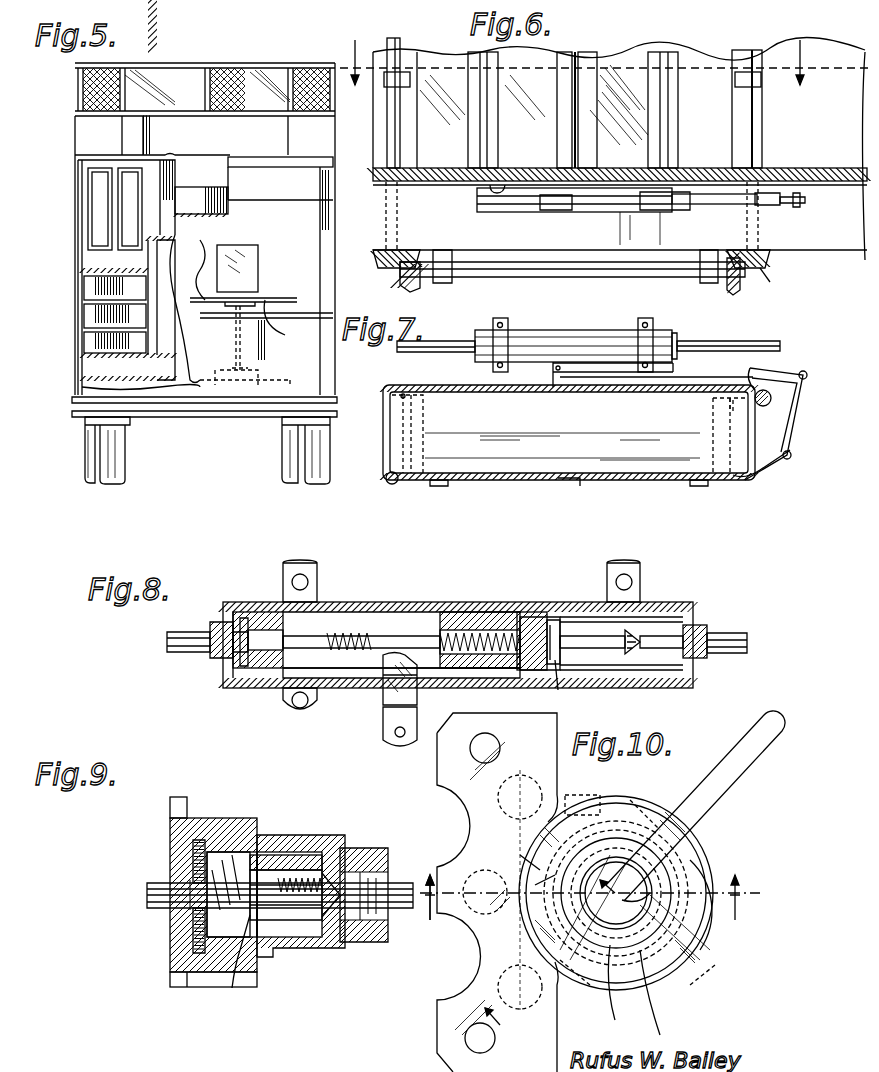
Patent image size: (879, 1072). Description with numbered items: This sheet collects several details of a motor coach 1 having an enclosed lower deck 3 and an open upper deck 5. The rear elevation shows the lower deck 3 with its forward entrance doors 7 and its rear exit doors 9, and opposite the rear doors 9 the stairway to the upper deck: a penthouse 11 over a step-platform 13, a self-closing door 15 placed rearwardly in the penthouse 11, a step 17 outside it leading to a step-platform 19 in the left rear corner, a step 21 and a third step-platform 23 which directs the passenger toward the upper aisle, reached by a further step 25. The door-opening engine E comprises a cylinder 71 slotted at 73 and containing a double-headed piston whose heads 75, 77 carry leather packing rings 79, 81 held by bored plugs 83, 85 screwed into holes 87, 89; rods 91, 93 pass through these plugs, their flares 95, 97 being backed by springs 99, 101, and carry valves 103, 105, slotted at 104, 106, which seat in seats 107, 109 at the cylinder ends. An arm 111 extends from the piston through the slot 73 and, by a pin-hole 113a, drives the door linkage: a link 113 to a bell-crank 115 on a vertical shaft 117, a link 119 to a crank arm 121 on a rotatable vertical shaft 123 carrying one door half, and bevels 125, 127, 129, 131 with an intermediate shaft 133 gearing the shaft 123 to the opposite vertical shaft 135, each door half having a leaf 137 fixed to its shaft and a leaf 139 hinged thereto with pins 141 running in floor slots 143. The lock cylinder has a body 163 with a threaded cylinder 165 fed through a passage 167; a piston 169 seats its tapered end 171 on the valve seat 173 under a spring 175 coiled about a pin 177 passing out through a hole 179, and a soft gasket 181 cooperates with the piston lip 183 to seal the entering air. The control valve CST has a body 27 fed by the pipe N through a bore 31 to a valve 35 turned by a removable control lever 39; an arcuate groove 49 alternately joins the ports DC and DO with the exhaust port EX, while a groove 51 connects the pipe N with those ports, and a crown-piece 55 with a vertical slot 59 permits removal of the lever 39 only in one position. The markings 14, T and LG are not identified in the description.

In FIG. 5, the motor coach 1 is at (238, 62).
In FIG. 5, the enclosed lower deck 3 is at (313, 366).
In FIG. 5, the open upper deck 5 is at (95, 133).
In FIG. 6, the set of doors 7 is at (690, 40).
In FIG. 7, the set of doors 9 is at (690, 500).
In FIG. 5, the penthouse 11 is at (155, 180).
In FIG. 9, the penthouse 11 is at (431, 907).
In FIG. 10, the penthouse 11 is at (585, 899).
In FIG. 5, the step-platform 13 is at (110, 350).
In FIG. 10, the valve plate 14 is at (590, 892).
In FIG. 5, the self-closing door 15 is at (100, 205).
In FIG. 5, the step 17 is at (110, 325).
In FIG. 5, the step-platform 19 is at (105, 268).
In FIG. 5, the step 21 is at (178, 238).
In FIG. 5, the third step-platform 23 is at (200, 215).
In FIG. 5, the step 25 is at (195, 195).
In FIG. 10, the body 27 is at (690, 935).
In FIG. 10, the bore 31 is at (540, 870).
In FIG. 10, the valve 35 is at (560, 890).
In FIG. 10, the control lever 39 is at (740, 775).
In FIG. 10, the arcuate groove 49 is at (712, 905).
In FIG. 10, the groove 51 is at (618, 999).
In FIG. 10, the crown-piece 55 is at (665, 1001).
In FIG. 10, the vertical slot 59 is at (712, 870).
In FIG. 6, the cylinder 71 is at (650, 210).
In FIG. 7, the cylinder 71 is at (590, 345).
In FIG. 8, the cylinder 71 is at (650, 602).
In FIG. 6, the slot 73 is at (580, 213).
In FIG. 8, the slot 73 is at (470, 680).
In FIG. 8, the piston head 75 is at (270, 612).
In FIG. 8, the piston head 77 is at (540, 612).
In FIG. 8, the leather packing ring 79 is at (255, 612).
In FIG. 8, the leather packing ring 81 is at (558, 620).
In FIG. 8, the bored plug 83 is at (248, 668).
In FIG. 8, the bored plug 85 is at (559, 685).
In FIG. 8, the hole 87 is at (305, 612).
In FIG. 8, the hole 89 is at (470, 632).
In FIG. 8, the rod 91 is at (345, 635).
In FIG. 8, the rod 93 is at (590, 635).
In FIG. 8, the flare 95 is at (360, 612).
In FIG. 8, the flare 97 is at (522, 612).
In FIG. 8, the spring 99 is at (370, 633).
In FIG. 8, the spring 101 is at (465, 612).
In FIG. 8, the valve 103 is at (235, 655).
In FIG. 8, the slot 104 is at (222, 622).
In FIG. 8, the valve 105 is at (637, 645).
In FIG. 8, the slot 106 is at (670, 612).
In FIG. 8, the seat 107 is at (210, 648).
In FIG. 8, the seat 109 is at (700, 658).
In FIG. 6, the arm 111 is at (535, 212).
In FIG. 7, the arm 111 is at (540, 370).
In FIG. 8, the arm 111 is at (388, 700).
In FIG. 6, the link 113 is at (700, 204).
In FIG. 7, the link 113 is at (672, 377).
In FIG. 7, the pin-hole 113a is at (580, 372).
In FIG. 8, the pin-hole 113a is at (395, 732).
In FIG. 6, the bell-crank 115 is at (760, 190).
In FIG. 7, the bell-crank 115 is at (755, 365).
In FIG. 6, the vertical shaft 117 is at (775, 193).
In FIG. 7, the vertical shaft 117 is at (776, 424).
In FIG. 6, the link 119 is at (797, 205).
In FIG. 7, the link 119 is at (797, 460).
In FIG. 6, the crank arm 121 is at (755, 262).
In FIG. 7, the crank arm 121 is at (770, 480).
In FIG. 6, the rotatable vertical shaft 123 is at (752, 60).
In FIG. 7, the rotatable vertical shaft 123 is at (740, 490).
In FIG. 6, the bevel 125 is at (755, 270).
In FIG. 6, the bevel 127 is at (728, 285).
In FIG. 6, the bevel 129 is at (400, 275).
In FIG. 6, the bevel 131 is at (385, 250).
In FIG. 6, the intermediate shaft 133 is at (545, 277).
In FIG. 6, the vertical shaft 135 is at (400, 55).
In FIG. 7, the vertical shaft 135 is at (390, 480).
In FIG. 6, the leaf 137 is at (568, 110).
In FIG. 7, the leaf 137 is at (680, 486).
In FIG. 6, the leaf 139 is at (576, 110).
In FIG. 7, the leaf 139 is at (615, 486).
In FIG. 7, the pin 141 is at (560, 478).
In FIG. 7, the slot 143 is at (640, 476).
In FIG. 9, the body 163 is at (178, 920).
In FIG. 9, the threaded cylinder 165 is at (285, 948).
In FIG. 9, the passage 167 is at (370, 875).
In FIG. 9, the piston 169 is at (285, 870).
In FIG. 9, the tapered end 171 is at (310, 860).
In FIG. 9, the valve seat 173 is at (330, 870).
In FIG. 9, the spring 175 is at (218, 852).
In FIG. 9, the pin 177 is at (190, 860).
In FIG. 9, the hole 179 is at (170, 883).
In FIG. 9, the gasket 181 is at (190, 940).
In FIG. 9, the lip 183 is at (238, 975).
In FIG. 6, the door-opening engine E is at (505, 212).
In FIG. 7, the door-opening engine E is at (535, 335).
In FIG. 8, the door-opening engine E is at (440, 612).
In FIG. 5, the table T is at (196, 300).
In FIG. 9, the lubricant gun LG is at (280, 820).
In FIG. 10, the pipe N is at (430, 966).
In FIG. 10, the port DO is at (585, 790).
In FIG. 10, the exhaust port EX is at (658, 799).
In FIG. 10, the port DC is at (583, 996).
In FIG. 10, the valve CST is at (712, 848).